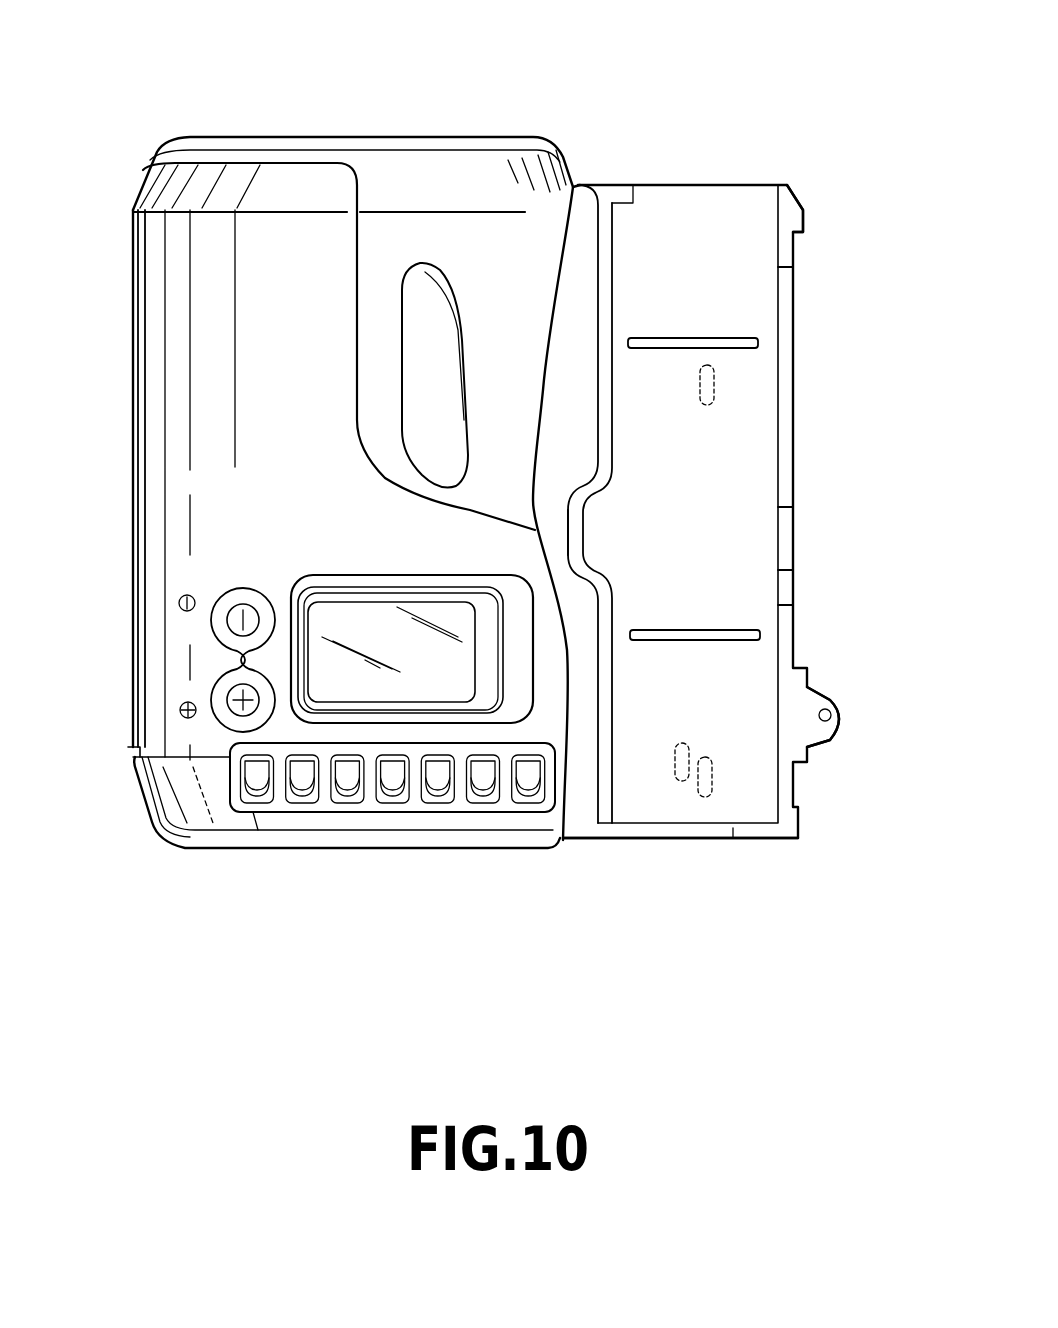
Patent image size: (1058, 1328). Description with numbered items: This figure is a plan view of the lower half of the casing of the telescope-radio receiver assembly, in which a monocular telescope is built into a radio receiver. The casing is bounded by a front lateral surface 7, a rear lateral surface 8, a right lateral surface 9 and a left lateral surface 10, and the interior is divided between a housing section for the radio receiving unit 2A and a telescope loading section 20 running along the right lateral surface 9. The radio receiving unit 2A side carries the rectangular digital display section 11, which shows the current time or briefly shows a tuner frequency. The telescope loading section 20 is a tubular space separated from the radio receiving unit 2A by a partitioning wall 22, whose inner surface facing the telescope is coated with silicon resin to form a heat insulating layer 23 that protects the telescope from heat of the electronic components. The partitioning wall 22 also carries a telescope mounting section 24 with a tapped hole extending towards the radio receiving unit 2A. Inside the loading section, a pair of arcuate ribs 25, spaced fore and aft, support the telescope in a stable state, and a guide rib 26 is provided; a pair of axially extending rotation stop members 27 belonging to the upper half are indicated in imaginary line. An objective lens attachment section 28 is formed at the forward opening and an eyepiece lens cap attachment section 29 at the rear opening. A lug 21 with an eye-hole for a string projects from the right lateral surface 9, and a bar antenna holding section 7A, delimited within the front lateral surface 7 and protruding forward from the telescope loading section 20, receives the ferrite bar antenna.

The front lateral surface 7 is at (372, 128).
The bar antenna holding section 7A is at (481, 203).
The rear lateral surface 8 is at (282, 856).
The right lateral surface 9 is at (808, 437).
The left lateral surface 10 is at (128, 420).
The digital display section 11 is at (340, 622).
The radio receiving unit 2A is at (418, 745).
The telescope loading section 20 is at (730, 497).
The lug 21 is at (830, 703).
The partitioning wall 22 is at (597, 262).
The heat insulating layer 23 is at (617, 277).
The telescope mounting section 24 is at (588, 525).
The arcuate ribs 25 is at (760, 343).
The guide rib 26 is at (793, 262).
The rotation stop members 27 is at (714, 385).
The objective lens attachment section 28 is at (745, 221).
The eyepiece lens cap attachment section 29 is at (733, 848).